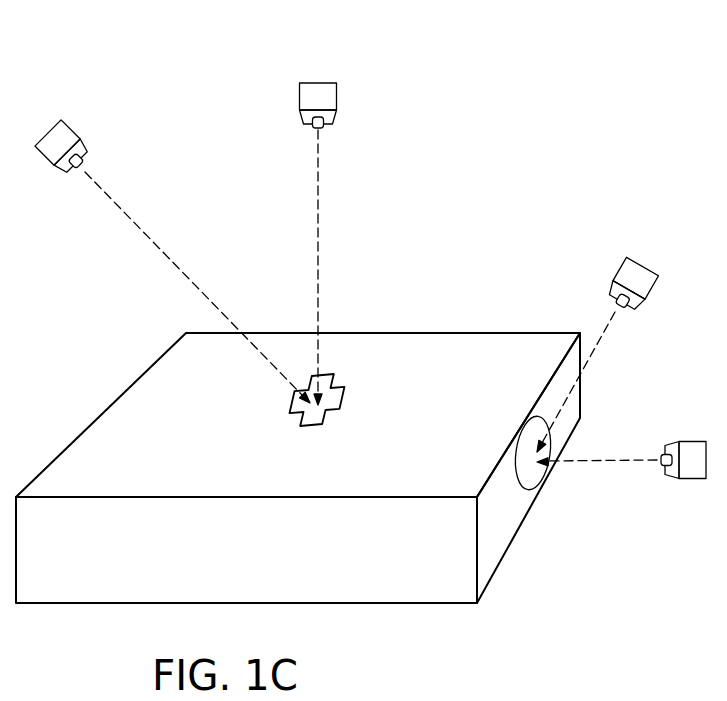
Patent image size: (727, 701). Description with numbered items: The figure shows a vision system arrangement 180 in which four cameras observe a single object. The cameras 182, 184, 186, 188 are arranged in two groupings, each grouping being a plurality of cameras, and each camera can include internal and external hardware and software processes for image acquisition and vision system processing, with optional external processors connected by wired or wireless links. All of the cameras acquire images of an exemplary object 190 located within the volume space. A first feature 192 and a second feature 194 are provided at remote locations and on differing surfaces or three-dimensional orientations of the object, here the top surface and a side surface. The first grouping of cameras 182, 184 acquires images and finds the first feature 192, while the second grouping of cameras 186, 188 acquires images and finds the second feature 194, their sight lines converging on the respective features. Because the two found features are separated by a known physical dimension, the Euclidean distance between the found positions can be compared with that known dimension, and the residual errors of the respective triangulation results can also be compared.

The vision system arrangement 180 is at (450, 118).
The camera 182 is at (57, 121).
The camera 184 is at (300, 83).
The camera 186 is at (631, 261).
The camera 188 is at (687, 478).
The object 190 is at (448, 343).
The first feature 192 is at (340, 385).
The second feature 194 is at (530, 482).